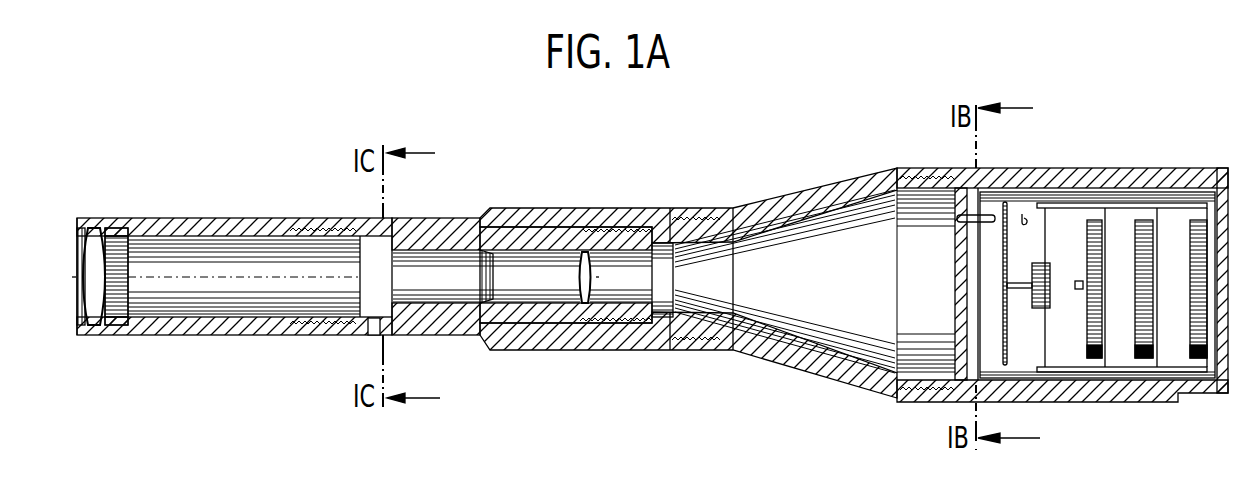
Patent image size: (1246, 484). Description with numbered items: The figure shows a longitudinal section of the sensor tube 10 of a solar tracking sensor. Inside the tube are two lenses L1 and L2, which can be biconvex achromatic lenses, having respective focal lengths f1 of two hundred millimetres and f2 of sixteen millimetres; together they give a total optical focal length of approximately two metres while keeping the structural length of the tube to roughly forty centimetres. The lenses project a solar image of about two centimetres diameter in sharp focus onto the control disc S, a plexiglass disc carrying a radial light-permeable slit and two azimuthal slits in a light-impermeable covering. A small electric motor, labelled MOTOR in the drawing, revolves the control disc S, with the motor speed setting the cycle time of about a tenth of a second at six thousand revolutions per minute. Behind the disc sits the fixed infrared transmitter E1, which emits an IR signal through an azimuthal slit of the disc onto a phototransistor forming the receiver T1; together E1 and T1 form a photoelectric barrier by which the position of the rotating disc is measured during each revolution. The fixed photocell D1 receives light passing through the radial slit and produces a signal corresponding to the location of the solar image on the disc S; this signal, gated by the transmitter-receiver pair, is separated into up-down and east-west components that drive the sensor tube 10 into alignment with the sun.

The sensor tube 10 is at (612, 135).
The first lens L1 is at (100, 265).
The second lens L2 is at (585, 265).
The focal length of first lens f1 is at (67, 251).
The focal length of second lens f2 is at (604, 284).
The receiver T1 is at (960, 215).
The transmitter E1 is at (1022, 214).
The photocell D1 is at (1078, 283).
The control disc S is at (1007, 300).
The electric motor MOTOR is at (1048, 300).